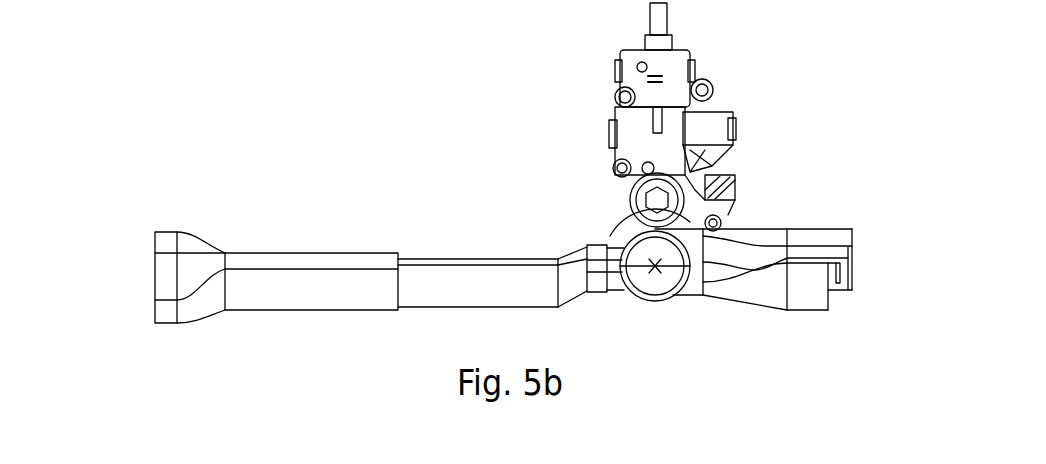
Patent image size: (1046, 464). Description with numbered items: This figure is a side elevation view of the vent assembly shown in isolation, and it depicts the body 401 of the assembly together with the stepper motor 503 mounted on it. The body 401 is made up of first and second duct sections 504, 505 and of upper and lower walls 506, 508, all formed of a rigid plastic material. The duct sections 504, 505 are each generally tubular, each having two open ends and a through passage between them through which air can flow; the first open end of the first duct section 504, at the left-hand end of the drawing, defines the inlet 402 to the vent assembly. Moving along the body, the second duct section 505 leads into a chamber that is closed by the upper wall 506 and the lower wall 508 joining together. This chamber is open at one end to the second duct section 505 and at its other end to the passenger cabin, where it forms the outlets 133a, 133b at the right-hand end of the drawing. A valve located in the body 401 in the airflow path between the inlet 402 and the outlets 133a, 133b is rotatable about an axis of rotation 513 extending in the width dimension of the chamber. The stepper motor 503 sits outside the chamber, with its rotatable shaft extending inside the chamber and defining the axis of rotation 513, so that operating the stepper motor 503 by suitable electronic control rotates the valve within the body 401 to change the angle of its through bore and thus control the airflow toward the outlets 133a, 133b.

The body 401 is at (501, 305).
The inlet 402 is at (140, 279).
The stepper motor 503 is at (718, 165).
The first duct section 504 is at (287, 278).
The second duct section 505 is at (478, 280).
The upper wall 506 is at (815, 238).
The lower wall 508 is at (760, 292).
The axis of rotation 513 is at (656, 272).
The outlet 133a is at (836, 310).
The outlet 133b is at (853, 290).